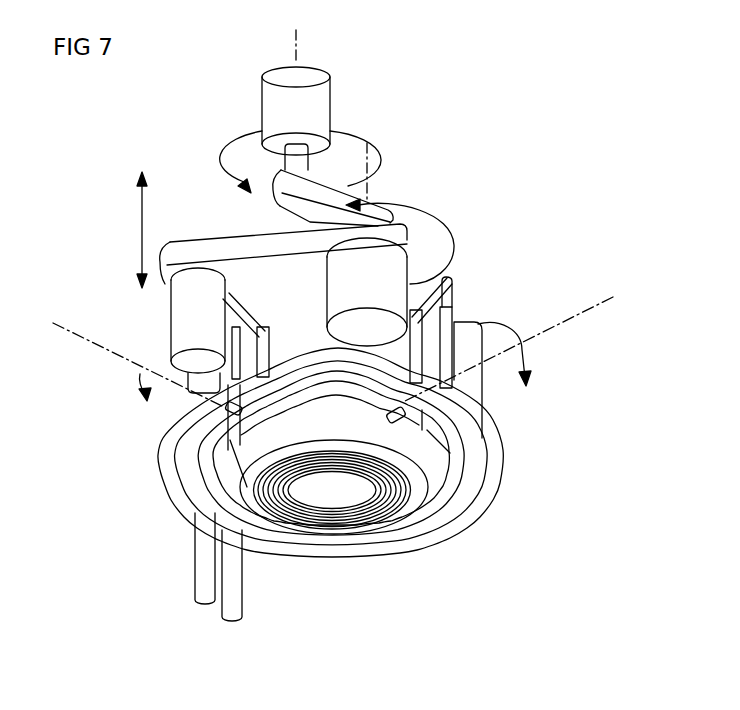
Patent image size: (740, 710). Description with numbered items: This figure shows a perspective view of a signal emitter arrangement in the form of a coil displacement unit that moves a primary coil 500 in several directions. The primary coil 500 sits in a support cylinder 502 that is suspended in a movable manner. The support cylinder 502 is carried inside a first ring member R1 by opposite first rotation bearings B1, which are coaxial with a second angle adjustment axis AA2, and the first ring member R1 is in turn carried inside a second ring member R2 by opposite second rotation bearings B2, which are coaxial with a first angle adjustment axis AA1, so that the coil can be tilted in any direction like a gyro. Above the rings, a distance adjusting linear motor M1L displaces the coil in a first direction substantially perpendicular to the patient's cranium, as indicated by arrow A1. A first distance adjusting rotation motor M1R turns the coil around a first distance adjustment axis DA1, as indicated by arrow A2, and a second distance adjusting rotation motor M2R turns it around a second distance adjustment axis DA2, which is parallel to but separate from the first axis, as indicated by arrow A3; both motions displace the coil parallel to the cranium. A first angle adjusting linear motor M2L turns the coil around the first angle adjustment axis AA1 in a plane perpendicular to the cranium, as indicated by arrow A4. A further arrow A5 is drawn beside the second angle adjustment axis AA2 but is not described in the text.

The first distance adjustment axis DA1 is at (324, 47).
The first distance adjusting rotation motor M1R is at (322, 92).
The arrow A2 is at (232, 157).
The second distance adjustment axis DA2 is at (394, 172).
The arrow A3 is at (455, 242).
The arrow A1 is at (140, 232).
The second distance adjusting rotation motor M2R is at (328, 280).
The distance adjusting linear motor M1L is at (180, 320).
The first angle adjustment axis AA1 is at (137, 364).
The arrow A4 is at (140, 374).
The second rotation bearings B2 is at (230, 409).
The first rotation bearings B1 is at (387, 413).
The second angle adjustment axis AA2 is at (509, 336).
The rotation about second tilt axis A5 is at (502, 333).
The first angle adjusting linear motor M2L is at (477, 382).
The second ring member R2 is at (490, 492).
The first ring member R1 is at (437, 503).
The support cylinder 502 is at (397, 513).
The primary coil 500 is at (340, 523).